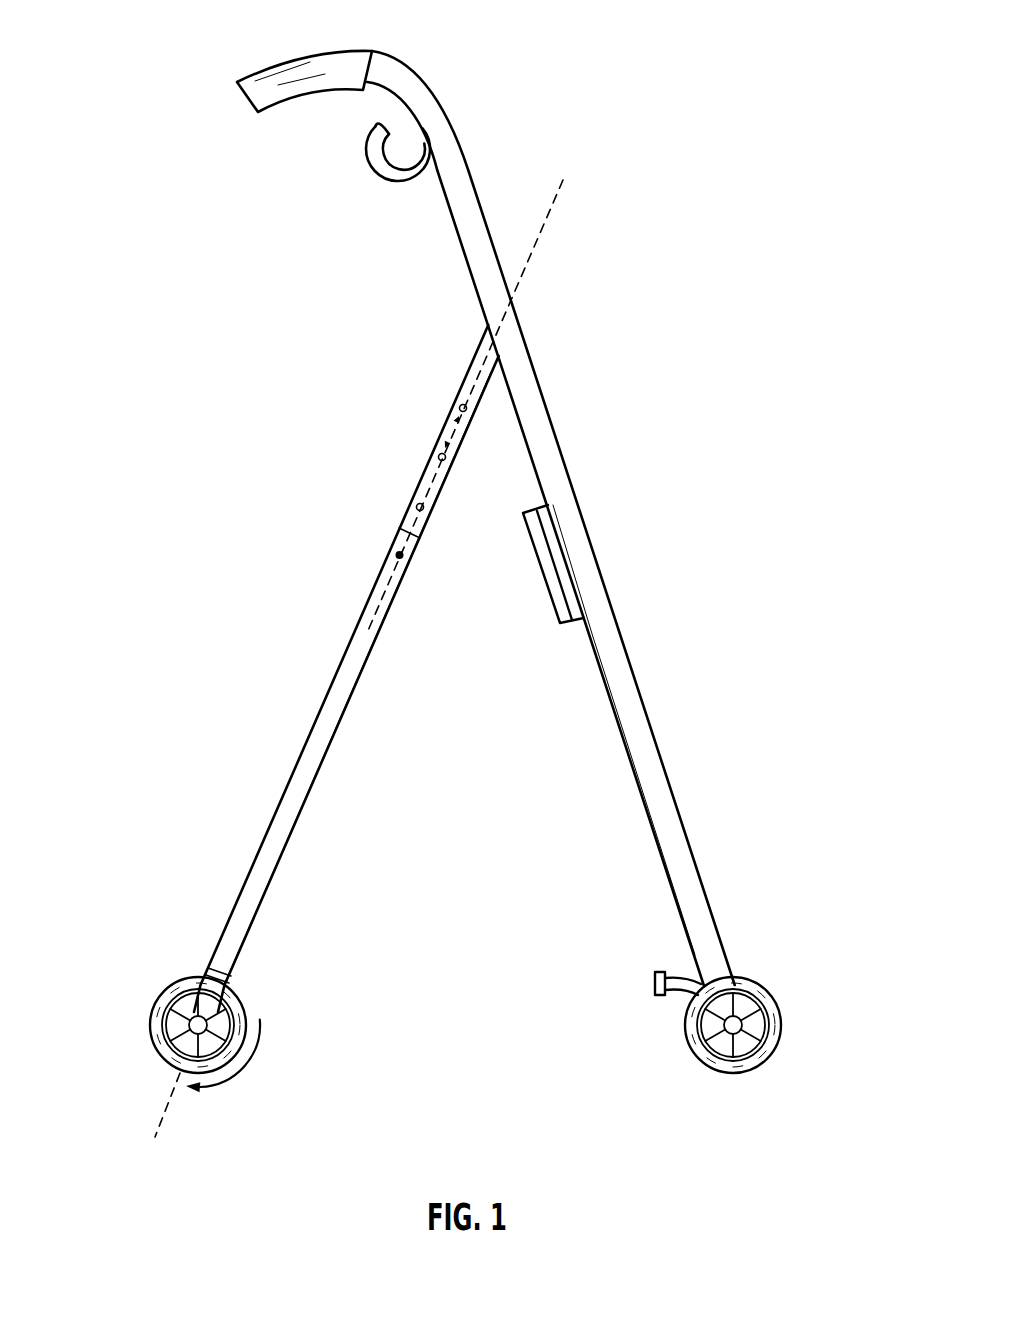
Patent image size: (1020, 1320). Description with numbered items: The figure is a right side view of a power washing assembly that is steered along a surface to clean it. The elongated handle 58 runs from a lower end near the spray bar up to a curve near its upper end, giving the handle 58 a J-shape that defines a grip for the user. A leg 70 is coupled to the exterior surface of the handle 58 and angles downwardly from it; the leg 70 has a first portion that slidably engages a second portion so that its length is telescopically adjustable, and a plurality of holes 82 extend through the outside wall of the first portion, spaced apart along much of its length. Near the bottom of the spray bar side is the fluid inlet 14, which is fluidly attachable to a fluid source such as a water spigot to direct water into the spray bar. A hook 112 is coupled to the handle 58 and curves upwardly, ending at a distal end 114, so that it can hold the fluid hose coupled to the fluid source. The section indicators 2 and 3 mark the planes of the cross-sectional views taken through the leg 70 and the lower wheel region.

The hook 112 is at (397, 165).
The distal end 114 is at (378, 124).
The section line 2- 2 is at (560, 180).
The holes 82 is at (450, 405).
The leg 70 is at (409, 528).
The handle 58 is at (558, 441).
The section line 3- 3 is at (237, 940).
The fluid inlet 14 is at (670, 973).